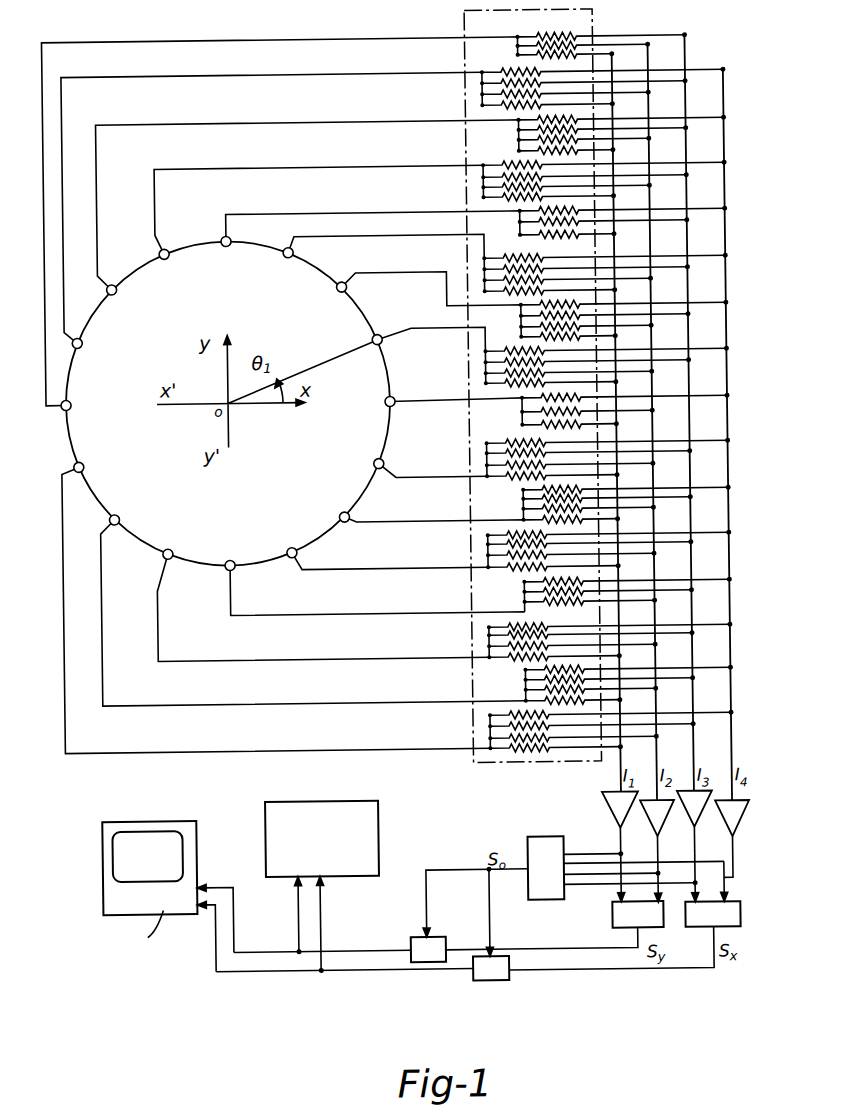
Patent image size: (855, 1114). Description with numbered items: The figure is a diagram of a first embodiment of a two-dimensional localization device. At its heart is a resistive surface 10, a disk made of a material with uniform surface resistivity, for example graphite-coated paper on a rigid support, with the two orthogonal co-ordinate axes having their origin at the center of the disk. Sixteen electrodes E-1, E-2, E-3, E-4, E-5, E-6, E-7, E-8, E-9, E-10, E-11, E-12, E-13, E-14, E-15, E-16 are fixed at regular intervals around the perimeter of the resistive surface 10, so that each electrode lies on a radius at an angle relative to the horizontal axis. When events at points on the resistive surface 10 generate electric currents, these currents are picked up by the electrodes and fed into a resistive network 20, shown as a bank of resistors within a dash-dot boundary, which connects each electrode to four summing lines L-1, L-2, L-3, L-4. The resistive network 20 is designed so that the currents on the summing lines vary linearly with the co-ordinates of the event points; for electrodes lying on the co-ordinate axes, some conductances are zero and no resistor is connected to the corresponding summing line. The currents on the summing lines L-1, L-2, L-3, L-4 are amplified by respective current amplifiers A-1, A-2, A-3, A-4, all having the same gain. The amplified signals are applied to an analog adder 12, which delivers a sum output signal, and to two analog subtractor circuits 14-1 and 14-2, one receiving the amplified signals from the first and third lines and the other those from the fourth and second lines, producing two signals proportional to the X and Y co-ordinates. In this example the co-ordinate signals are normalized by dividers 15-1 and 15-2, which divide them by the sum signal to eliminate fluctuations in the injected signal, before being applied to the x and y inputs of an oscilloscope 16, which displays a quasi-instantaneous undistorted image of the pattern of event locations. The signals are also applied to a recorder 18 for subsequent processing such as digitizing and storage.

The resistive surface 10 is at (285, 326).
The analog adder 12 is at (547, 840).
The analog subtractor circuit 14-1 is at (606, 907).
The analog subtractor circuit 14-2 is at (734, 914).
The divider 15-1 is at (416, 963).
The divider 15-2 is at (493, 982).
The oscilloscope 16 is at (163, 820).
The recorder 18 is at (340, 806).
The resistive network 20 is at (484, 764).
The electrode E-1 is at (413, 340).
The electrode E-2 is at (416, 292).
The electrode E-3 is at (378, 259).
The electrode E-4 is at (367, 243).
The electrode E-5 is at (319, 223).
The electrode E-6 is at (308, 216).
The electrode E-7 is at (273, 215).
The electrode E-8 is at (281, 225).
The electrode E-9 is at (276, 598).
The electrode E-10 is at (313, 600).
The electrode E-11 is at (323, 592).
The electrode E-12 is at (369, 573).
The electrode E-13 is at (379, 545).
The electrode E-14 is at (414, 506).
The electrode E-15 is at (414, 458).
The electrode E-16 is at (436, 401).
The summing line L-1 is at (617, 435).
The summing line L-2 is at (653, 478).
The summing line L-3 is at (690, 521).
The summing line L-4 is at (745, 567).
The current amplifier A-1 is at (606, 846).
The current amplifier A-2 is at (647, 851).
The current amplifier A-3 is at (686, 846).
The current amplifier A-4 is at (742, 851).